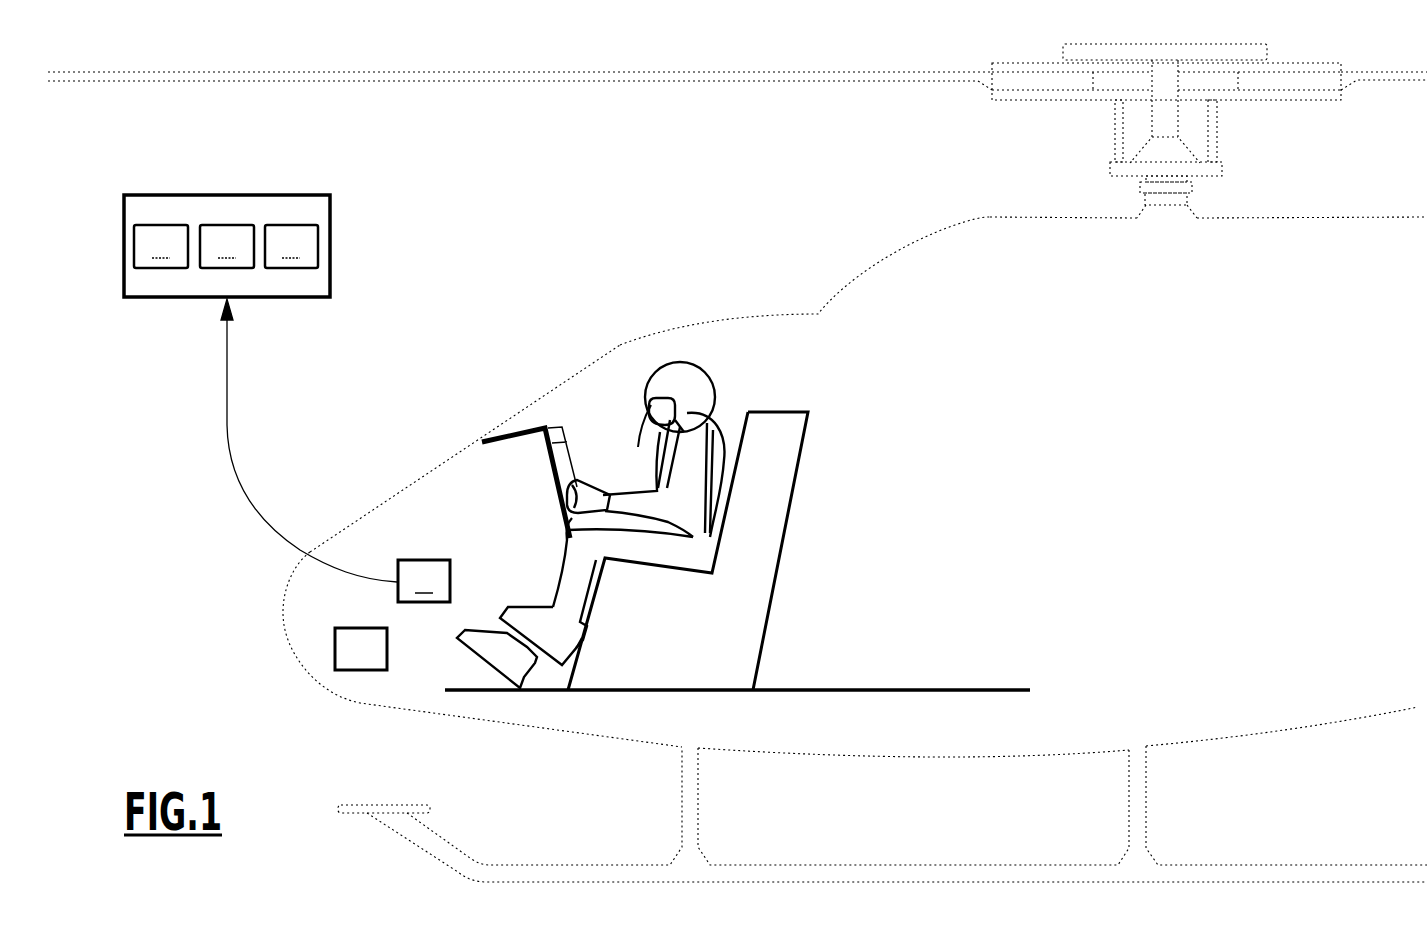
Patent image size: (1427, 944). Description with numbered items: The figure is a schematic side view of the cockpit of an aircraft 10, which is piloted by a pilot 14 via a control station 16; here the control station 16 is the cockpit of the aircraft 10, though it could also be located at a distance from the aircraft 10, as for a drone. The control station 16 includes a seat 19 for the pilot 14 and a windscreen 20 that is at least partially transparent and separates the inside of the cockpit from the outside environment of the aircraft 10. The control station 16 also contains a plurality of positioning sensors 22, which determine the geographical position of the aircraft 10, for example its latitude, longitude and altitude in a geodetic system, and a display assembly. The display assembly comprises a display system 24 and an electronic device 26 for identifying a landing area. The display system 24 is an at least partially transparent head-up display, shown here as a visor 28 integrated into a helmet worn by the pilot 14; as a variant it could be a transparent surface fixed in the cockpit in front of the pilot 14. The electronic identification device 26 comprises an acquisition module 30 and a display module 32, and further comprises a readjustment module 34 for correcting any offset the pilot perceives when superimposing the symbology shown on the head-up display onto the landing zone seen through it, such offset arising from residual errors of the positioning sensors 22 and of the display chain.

The aircraft 10 is at (990, 216).
The pilot 14 is at (700, 438).
The control station 16 is at (652, 345).
The seat 19 is at (733, 615).
The windscreen 20 is at (419, 481).
The positioning sensors 22 is at (352, 661).
The display system 24 is at (643, 403).
The electronic device for identifying a landing area 26 is at (287, 391).
The visor 28 is at (634, 442).
The acquisition module 30 is at (161, 246).
The display module 32 is at (227, 246).
The readjustment module 34 is at (330, 207).